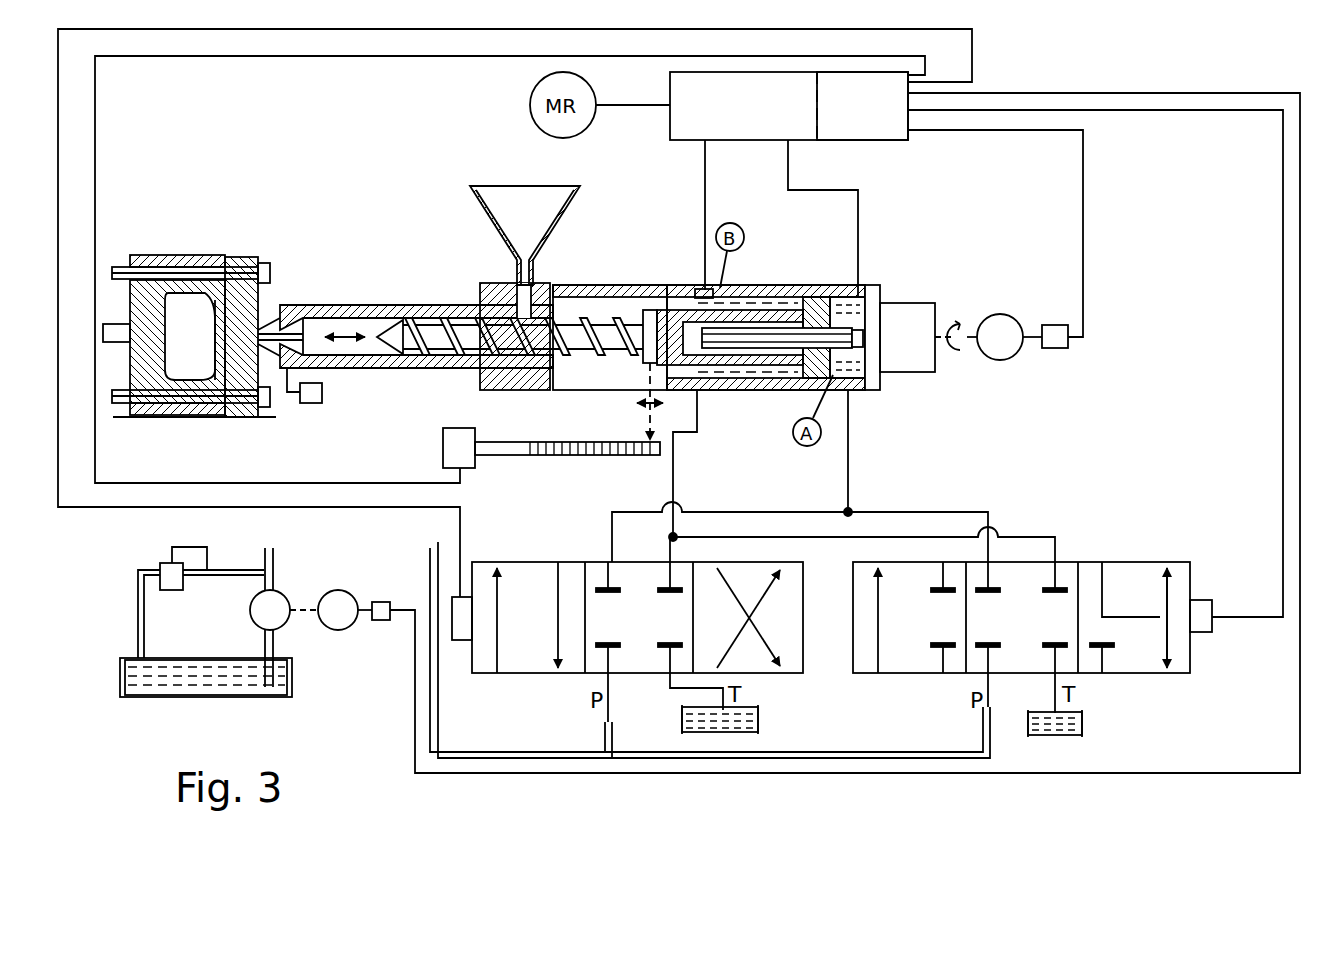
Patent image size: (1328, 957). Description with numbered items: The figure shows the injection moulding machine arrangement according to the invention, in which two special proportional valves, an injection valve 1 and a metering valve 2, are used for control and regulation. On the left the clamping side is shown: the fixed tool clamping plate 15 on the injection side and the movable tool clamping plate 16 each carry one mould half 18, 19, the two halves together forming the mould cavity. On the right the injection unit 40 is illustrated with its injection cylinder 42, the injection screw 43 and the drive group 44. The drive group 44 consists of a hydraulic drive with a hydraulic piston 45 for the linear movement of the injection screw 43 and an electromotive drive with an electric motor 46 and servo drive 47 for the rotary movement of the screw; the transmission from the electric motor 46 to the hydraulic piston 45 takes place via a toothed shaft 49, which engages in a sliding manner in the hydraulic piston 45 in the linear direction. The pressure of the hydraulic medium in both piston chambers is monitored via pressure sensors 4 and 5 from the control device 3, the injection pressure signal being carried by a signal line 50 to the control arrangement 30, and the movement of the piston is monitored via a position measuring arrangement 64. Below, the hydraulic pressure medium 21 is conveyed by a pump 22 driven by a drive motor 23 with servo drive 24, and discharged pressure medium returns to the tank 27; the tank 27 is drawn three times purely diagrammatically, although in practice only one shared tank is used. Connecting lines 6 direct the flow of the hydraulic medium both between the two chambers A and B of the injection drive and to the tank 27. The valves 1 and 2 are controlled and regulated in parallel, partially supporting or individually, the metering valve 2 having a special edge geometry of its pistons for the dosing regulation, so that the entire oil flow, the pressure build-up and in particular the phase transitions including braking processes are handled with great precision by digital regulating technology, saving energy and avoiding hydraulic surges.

The injection valve 1 is at (593, 556).
The metering valve 2 is at (1118, 558).
The control device 3 is at (748, 141).
The pressure sensor 4 is at (700, 290).
The pressure sensor 5 is at (868, 297).
The connecting lines 6 is at (948, 522).
The fixed tool clamping plate 15 is at (243, 257).
The movable tool clamping plate 16 is at (142, 255).
The mould half 18 is at (168, 403).
The mould half 19 is at (214, 403).
The hydraulic pressure medium 21 is at (178, 658).
The pump 22 is at (283, 592).
The drive motor 23 is at (343, 590).
The servo drive 24 is at (378, 620).
The tank 27 is at (292, 676).
The control arrangement 30 is at (893, 141).
The injection unit 40 is at (458, 378).
The injection cylinder 42 is at (330, 305).
The injection screw 43 is at (443, 325).
The drive group 44 is at (790, 283).
The hydraulic piston 45 is at (813, 310).
The electric motor 46 is at (1000, 360).
The servo drive 47 is at (1068, 348).
The toothed shaft 49 is at (863, 337).
The signal line 50 is at (860, 218).
The position measuring arrangement 64 is at (558, 458).